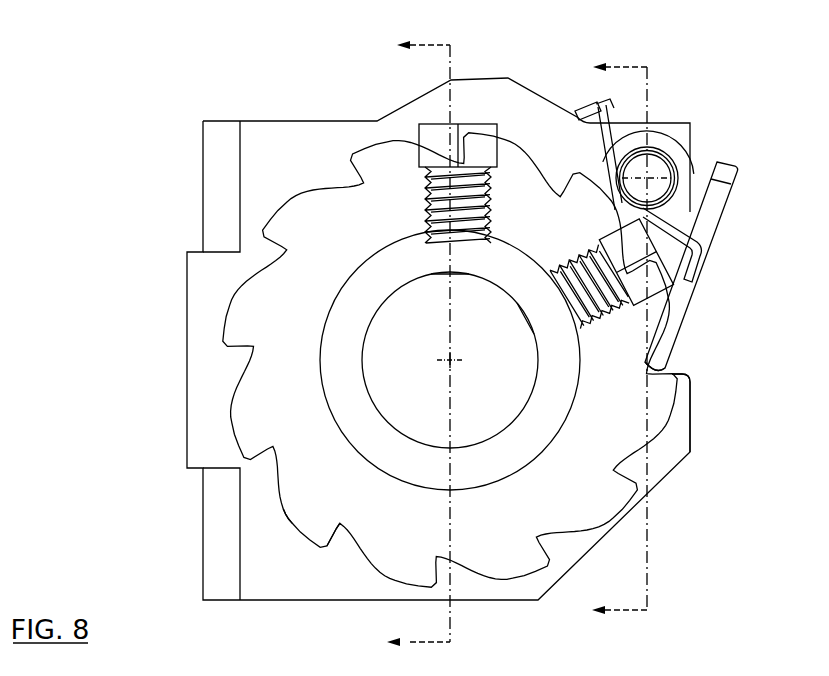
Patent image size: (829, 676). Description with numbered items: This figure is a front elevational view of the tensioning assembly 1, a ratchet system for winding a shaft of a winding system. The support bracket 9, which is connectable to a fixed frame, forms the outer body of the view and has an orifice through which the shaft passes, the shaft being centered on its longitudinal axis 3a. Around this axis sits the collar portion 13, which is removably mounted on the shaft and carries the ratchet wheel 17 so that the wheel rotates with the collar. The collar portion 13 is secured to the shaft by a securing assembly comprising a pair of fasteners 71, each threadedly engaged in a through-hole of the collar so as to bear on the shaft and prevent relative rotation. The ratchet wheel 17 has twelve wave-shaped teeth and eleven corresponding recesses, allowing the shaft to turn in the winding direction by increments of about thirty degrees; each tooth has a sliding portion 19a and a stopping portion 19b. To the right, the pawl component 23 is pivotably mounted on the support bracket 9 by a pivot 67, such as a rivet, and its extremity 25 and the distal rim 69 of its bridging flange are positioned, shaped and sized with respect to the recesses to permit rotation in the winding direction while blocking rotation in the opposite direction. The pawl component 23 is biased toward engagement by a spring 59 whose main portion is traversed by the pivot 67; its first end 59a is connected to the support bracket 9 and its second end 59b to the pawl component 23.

The tensioning assembly 1 is at (733, 46).
The support bracket 9 is at (284, 121).
The collar portion 13 is at (545, 402).
The ratchet wheel 17 is at (503, 530).
The sliding portion 19a is at (290, 537).
The stopping portion 19b is at (340, 543).
The pawl component 23 is at (742, 200).
The extremity 25 is at (672, 362).
The distal rim 69 is at (655, 366).
The spring 59 is at (675, 157).
The first end 59a is at (583, 105).
The second end 59b is at (705, 253).
The pivot 67 is at (652, 178).
The fastener 71 is at (458, 283).
The longitudinal axis 3a is at (447, 362).